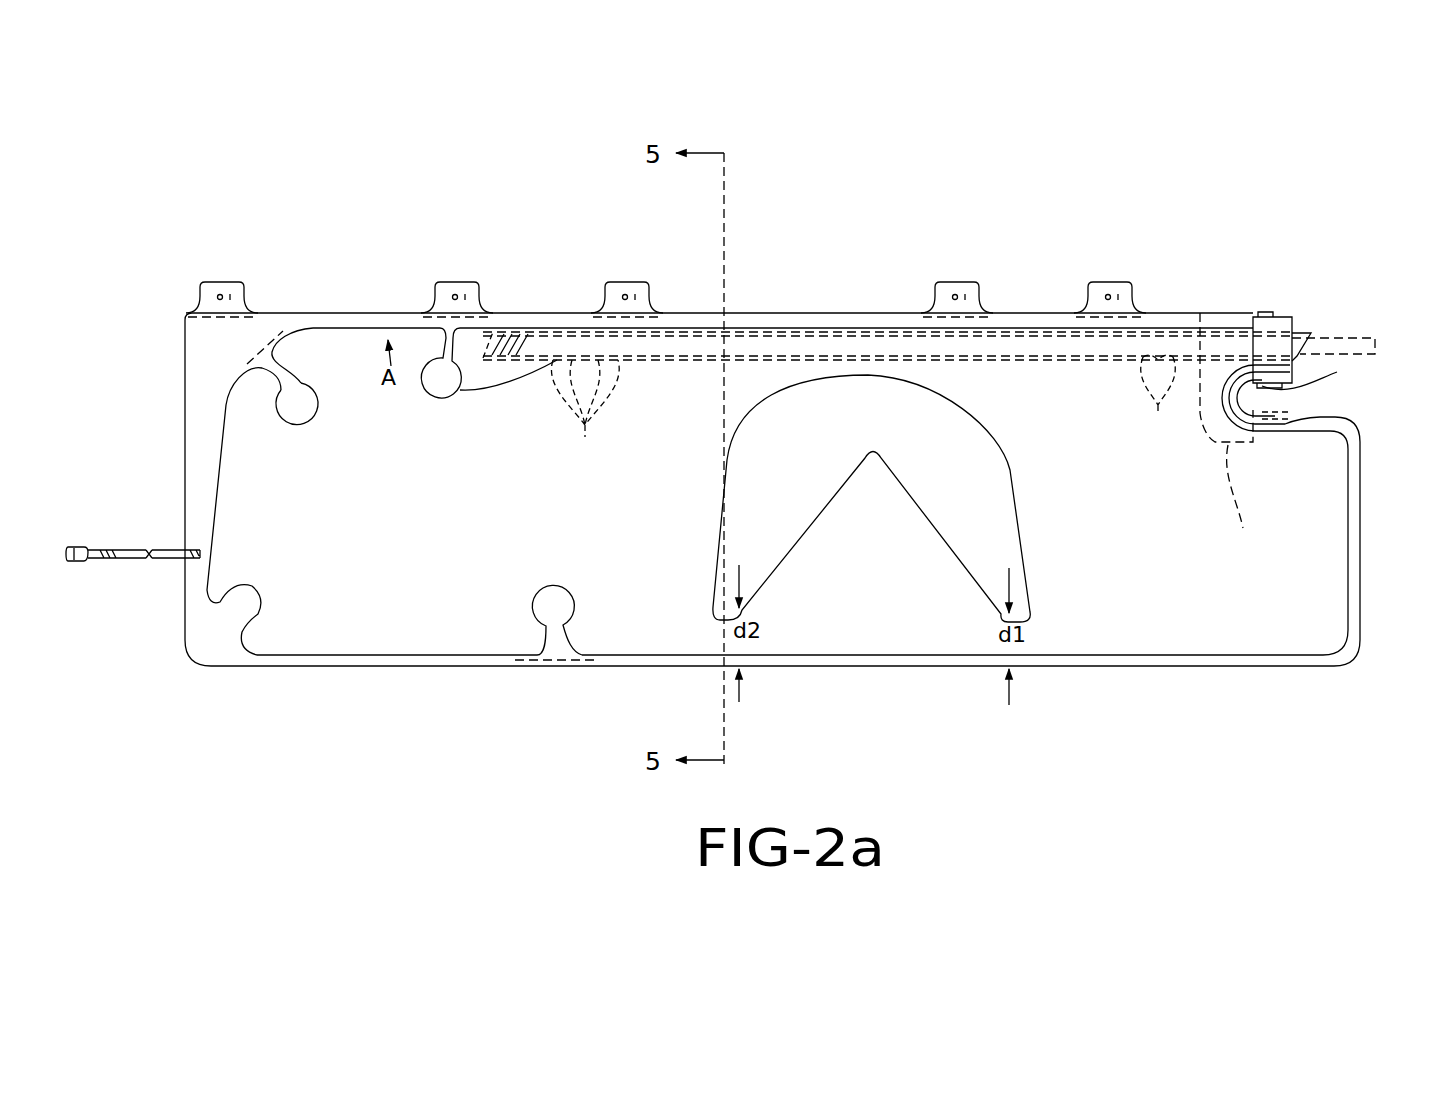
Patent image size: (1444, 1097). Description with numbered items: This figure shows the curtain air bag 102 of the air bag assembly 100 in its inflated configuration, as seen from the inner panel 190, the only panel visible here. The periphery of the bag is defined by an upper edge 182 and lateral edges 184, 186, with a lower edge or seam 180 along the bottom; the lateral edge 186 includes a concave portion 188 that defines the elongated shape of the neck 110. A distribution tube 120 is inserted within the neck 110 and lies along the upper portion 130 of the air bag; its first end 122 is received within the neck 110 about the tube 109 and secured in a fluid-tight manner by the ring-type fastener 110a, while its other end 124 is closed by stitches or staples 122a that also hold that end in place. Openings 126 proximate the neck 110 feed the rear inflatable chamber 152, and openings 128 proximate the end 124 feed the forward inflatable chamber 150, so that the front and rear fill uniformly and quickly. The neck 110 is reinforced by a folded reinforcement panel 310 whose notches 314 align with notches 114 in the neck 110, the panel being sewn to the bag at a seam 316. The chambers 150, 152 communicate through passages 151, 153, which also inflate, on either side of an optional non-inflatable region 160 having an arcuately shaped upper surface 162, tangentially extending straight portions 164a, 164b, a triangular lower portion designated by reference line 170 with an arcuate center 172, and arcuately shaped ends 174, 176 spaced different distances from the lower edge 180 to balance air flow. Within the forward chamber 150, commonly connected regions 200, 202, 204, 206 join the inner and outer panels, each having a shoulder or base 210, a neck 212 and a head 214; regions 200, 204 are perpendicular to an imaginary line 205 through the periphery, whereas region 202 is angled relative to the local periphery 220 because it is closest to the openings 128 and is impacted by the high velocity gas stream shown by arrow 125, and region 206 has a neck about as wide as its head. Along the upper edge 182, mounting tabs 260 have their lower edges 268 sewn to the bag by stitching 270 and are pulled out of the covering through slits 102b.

The bumper assembly 100 is at (314, 310).
The air bag 102 is at (757, 380).
The slit 102b is at (242, 308).
The distribution tube / housing extension 109 is at (1342, 335).
The neck 110 is at (1213, 322).
The ring-type fastener 110a is at (1267, 315).
The notches 114 is at (1275, 388).
The distribution tube 120 is at (832, 352).
The first end of distribution tube 122 is at (1295, 328).
The stitches or staples / fastener 122a is at (525, 348).
The second end of distribution tube 124 is at (497, 336).
The arrow (inflation gas stream) 125 is at (454, 410).
The openings 126 is at (1162, 395).
The openings 128 is at (585, 411).
The upper portion of air bag 130 is at (655, 385).
The first inflatable chamber 150 is at (412, 516).
The passage 151 is at (814, 377).
The rear inflatable chamber 152 is at (1140, 516).
The passage 153 is at (864, 623).
The non-inflatable region 160 is at (893, 430).
The arcuately shaped upper surface 162 is at (947, 393).
The tangentially extending straight portion 164a is at (732, 503).
The tangentially extending straight portion 164b is at (1027, 533).
The reference line of triangular lower portion 170 is at (800, 533).
The center of lower triangular shape 172 is at (876, 450).
The first arcuately shaped end 174 is at (1030, 627).
The second arcuately shaped end 176 is at (714, 612).
The lower edge or seam 180 is at (927, 660).
The upper edge 182 is at (376, 318).
The lateral edge 184 is at (192, 460).
The lateral edge 186 is at (1357, 543).
The concave portion 188 is at (1295, 415).
The inner panel 190 is at (367, 612).
The commonly connected region 200 is at (530, 594).
The commonly connected region 202 is at (426, 404).
The commonly connected region 204 is at (291, 427).
The imaginary line 205 is at (247, 363).
The commonly connected region 206 is at (270, 581).
The shoulder or base 210 is at (557, 645).
The neck 212 is at (548, 635).
The head 214 is at (552, 596).
The local periphery 220 is at (428, 389).
The tab 260 is at (218, 288).
The lower edge of tab 268 is at (1083, 318).
The stitching 270 is at (435, 317).
The reinforcement panel 310 is at (1242, 503).
The notches 314 is at (1293, 418).
The seam 316 is at (1218, 420).